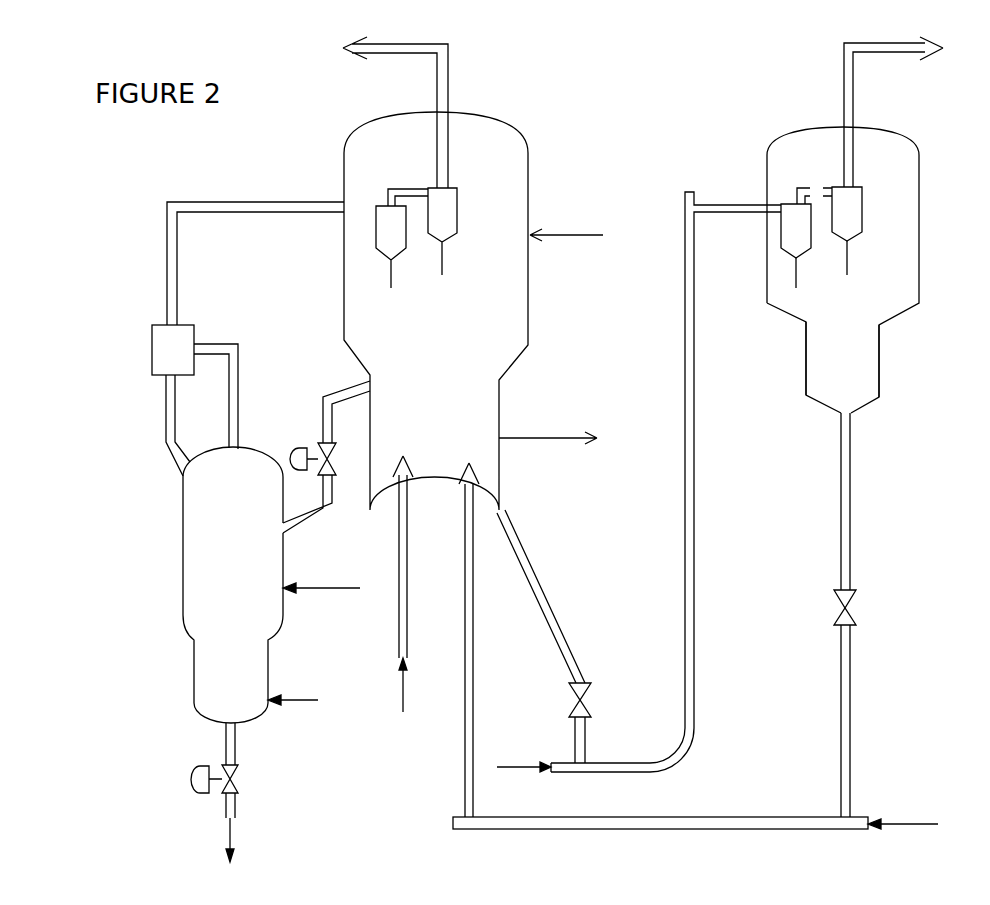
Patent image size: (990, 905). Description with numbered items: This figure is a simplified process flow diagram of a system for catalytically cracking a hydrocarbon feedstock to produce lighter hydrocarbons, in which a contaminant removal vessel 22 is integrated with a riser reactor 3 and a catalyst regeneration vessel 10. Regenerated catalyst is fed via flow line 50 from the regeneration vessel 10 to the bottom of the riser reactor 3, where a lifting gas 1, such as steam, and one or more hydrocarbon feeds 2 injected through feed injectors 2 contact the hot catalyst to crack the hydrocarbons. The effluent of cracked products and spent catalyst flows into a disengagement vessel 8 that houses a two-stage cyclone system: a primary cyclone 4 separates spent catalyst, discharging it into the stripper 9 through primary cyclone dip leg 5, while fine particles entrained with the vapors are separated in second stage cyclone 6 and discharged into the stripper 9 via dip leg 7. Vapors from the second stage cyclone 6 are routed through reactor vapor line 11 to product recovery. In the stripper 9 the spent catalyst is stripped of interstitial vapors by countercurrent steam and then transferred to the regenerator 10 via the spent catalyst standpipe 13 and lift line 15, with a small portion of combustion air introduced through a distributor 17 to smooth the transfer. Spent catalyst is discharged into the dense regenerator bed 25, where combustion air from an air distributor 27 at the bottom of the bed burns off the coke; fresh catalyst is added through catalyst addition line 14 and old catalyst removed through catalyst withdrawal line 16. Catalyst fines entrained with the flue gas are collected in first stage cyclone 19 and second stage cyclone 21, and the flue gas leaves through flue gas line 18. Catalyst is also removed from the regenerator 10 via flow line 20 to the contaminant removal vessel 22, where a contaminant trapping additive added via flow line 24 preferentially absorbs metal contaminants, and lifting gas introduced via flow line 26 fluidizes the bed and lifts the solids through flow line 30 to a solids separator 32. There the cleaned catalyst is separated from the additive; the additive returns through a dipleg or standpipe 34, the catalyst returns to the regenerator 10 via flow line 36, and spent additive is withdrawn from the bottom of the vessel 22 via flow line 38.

The lifting gas 1 is at (573, 757).
The hydrocarbon feeds 2 is at (682, 683).
The riser reactor 3 is at (733, 460).
The primary cyclone 4 is at (806, 223).
The primary cyclone dip leg 5 is at (789, 275).
The second stage cyclone 6 is at (847, 214).
The dip leg 7 is at (854, 259).
The disengagement vessel 8 is at (919, 258).
The stripper 9 is at (879, 352).
The catalyst regeneration vessel 10 is at (528, 295).
The reactor vapor line 11 is at (893, 104).
The spent catalyst standpipe 13 is at (855, 615).
The catalyst addition line 14 is at (566, 226).
The lift line 15 is at (660, 814).
The catalyst withdrawal line 16 is at (548, 429).
The distributor 17 is at (903, 816).
The flue gas line 18 is at (395, 112).
The first stage cyclone 19 is at (402, 238).
The flow line 20 is at (326, 453).
The second stage cyclone 21 is at (442, 231).
The contaminant removal vessel 22 is at (183, 527).
The flow line 24 is at (323, 582).
The dense regenerator bed 25 is at (437, 417).
The flow line 26 is at (293, 692).
The air distributor 27 is at (424, 636).
The flow line 30 is at (216, 396).
The solids separator 32 is at (173, 350).
The dipleg or standpipe 34 is at (164, 425).
The flow line 36 is at (255, 252).
The flow line 38 is at (227, 792).
The flow line 50 is at (544, 636).